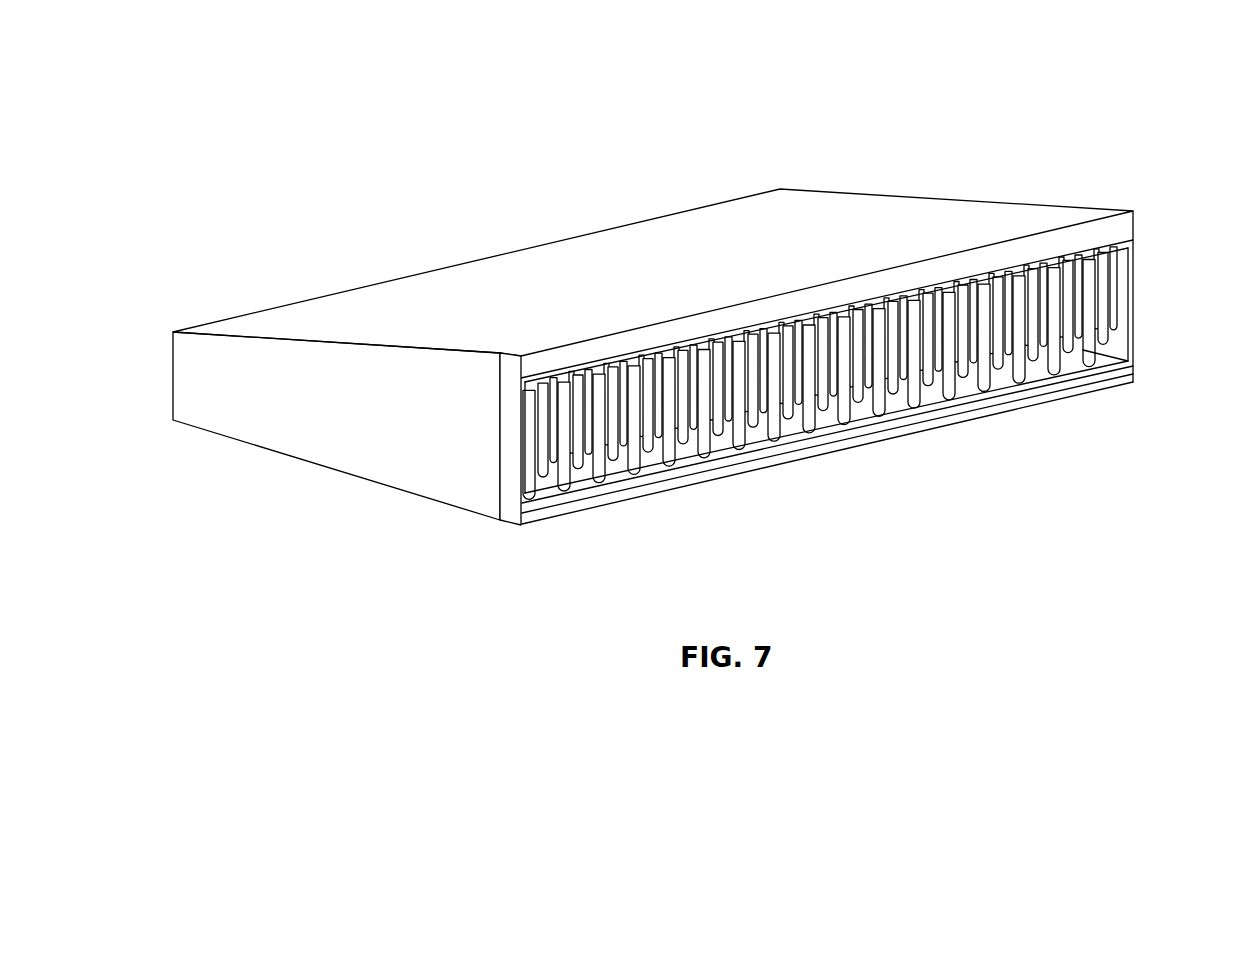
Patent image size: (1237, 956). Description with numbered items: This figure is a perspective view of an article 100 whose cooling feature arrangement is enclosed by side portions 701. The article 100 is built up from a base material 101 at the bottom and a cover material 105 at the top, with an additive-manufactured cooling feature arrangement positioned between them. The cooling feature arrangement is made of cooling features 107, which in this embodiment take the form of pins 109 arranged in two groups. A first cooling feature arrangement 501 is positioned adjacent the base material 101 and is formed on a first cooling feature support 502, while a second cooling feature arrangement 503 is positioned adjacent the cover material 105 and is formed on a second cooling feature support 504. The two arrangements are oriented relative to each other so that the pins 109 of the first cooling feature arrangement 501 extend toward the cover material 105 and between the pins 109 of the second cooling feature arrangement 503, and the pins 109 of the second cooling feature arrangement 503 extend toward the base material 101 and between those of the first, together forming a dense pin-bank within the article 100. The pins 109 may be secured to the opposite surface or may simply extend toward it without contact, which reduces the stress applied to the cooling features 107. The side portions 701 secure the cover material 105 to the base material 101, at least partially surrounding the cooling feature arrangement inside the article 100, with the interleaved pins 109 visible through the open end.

The article 100 is at (309, 156).
The base material 101 is at (610, 500).
The cover material 105 is at (1117, 227).
The cooling features 107 is at (720, 428).
The pins 109 is at (845, 298).
The first cooling feature arrangement 501 is at (995, 381).
The first cooling feature support 502 is at (1092, 373).
The second cooling feature arrangement 503 is at (962, 300).
The second cooling feature support 504 is at (1089, 250).
The side portions 701 is at (400, 460).